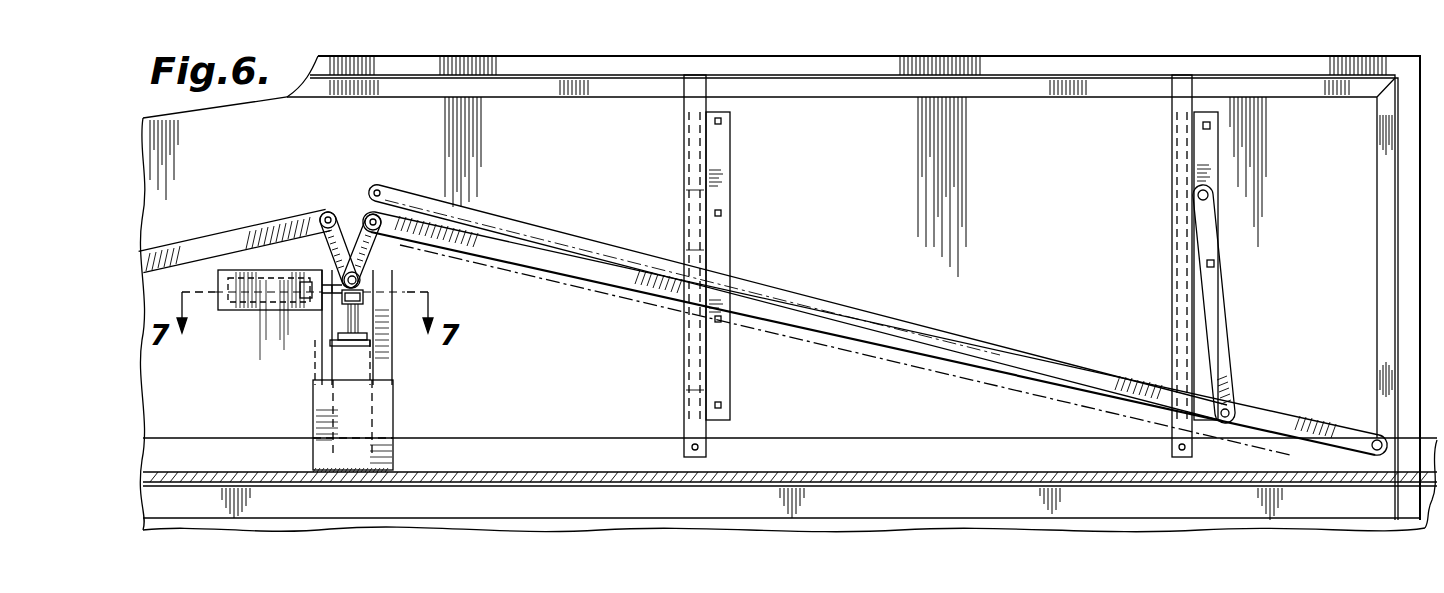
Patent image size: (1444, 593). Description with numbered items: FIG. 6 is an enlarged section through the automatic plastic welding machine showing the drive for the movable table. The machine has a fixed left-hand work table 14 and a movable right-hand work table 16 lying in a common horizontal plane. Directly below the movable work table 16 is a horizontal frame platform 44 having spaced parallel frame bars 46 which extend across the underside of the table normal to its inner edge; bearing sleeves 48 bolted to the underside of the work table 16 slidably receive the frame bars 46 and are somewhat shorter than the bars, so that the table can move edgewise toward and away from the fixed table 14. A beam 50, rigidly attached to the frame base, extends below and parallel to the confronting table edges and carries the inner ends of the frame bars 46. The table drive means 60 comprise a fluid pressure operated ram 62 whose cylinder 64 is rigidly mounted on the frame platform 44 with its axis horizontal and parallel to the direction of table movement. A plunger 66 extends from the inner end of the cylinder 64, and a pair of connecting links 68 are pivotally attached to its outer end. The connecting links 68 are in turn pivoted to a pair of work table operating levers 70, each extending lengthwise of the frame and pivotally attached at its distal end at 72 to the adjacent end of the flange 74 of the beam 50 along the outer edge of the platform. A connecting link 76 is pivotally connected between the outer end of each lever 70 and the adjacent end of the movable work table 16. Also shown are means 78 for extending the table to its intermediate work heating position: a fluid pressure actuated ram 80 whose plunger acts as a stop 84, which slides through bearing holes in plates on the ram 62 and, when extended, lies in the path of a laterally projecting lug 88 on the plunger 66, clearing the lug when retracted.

The left-hand work table 14 is at (660, 528).
The right-hand work table 16 is at (872, 404).
The frame platform 44 is at (676, 95).
The frame bars 46 is at (700, 110).
The bearing sleeves 48 is at (693, 198).
The beam 50 is at (765, 484).
The table drive means 60 is at (272, 208).
The fluid pressure operated ram 62 is at (376, 403).
The cylinder 64 is at (328, 402).
The plunger 66 is at (345, 308).
The connecting links 68 is at (362, 226).
The work table operating levers 70 is at (207, 250).
The pivot 72 is at (1372, 440).
The flange 74 is at (512, 448).
The connecting link 76 is at (1218, 329).
The means for effecting inward extension 78 is at (282, 312).
The fluid pressure actuated ram 80 is at (262, 268).
The stop 84 is at (372, 302).
The lug 88 is at (365, 278).